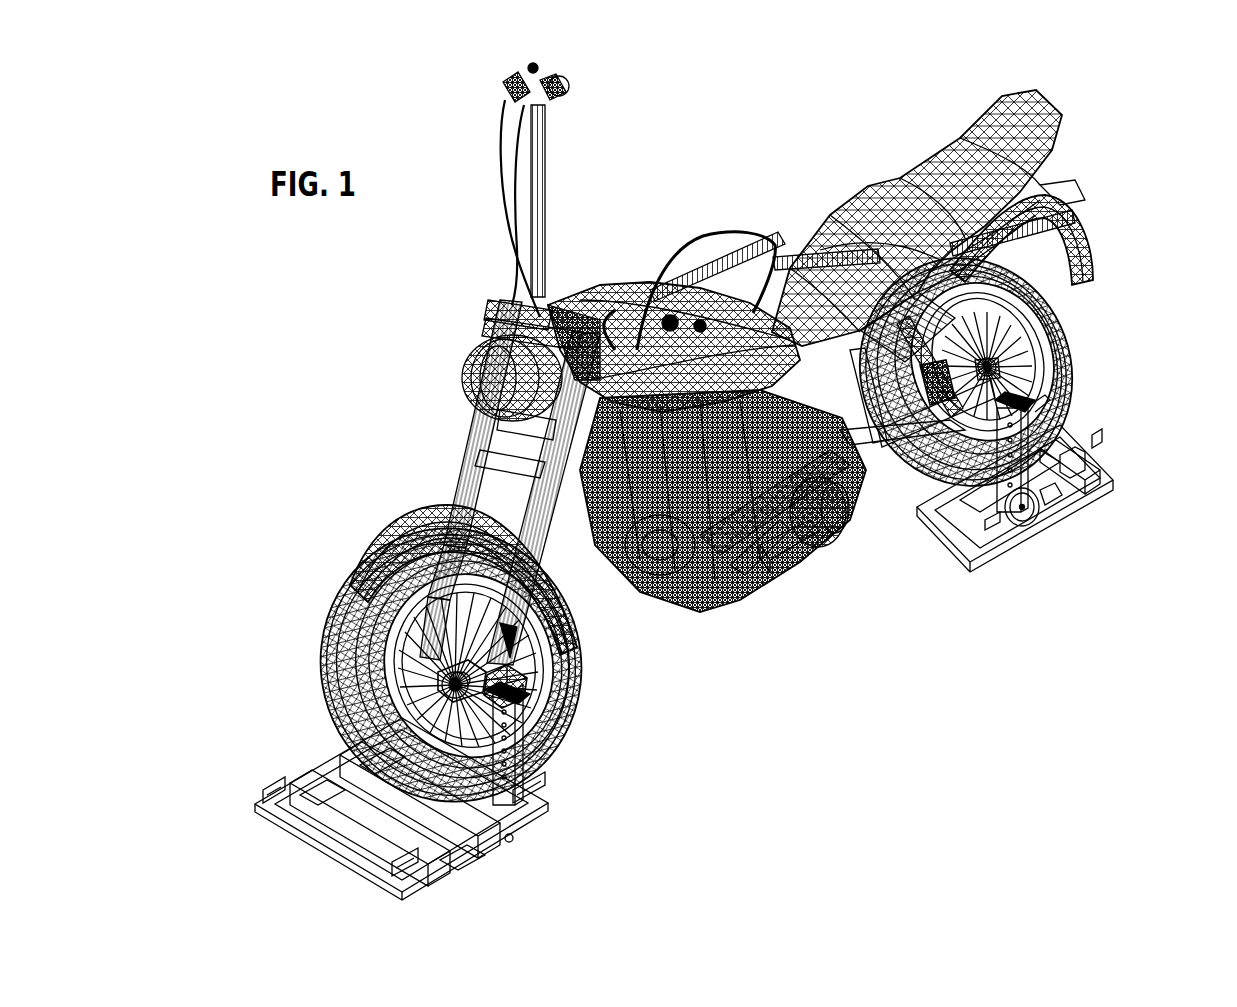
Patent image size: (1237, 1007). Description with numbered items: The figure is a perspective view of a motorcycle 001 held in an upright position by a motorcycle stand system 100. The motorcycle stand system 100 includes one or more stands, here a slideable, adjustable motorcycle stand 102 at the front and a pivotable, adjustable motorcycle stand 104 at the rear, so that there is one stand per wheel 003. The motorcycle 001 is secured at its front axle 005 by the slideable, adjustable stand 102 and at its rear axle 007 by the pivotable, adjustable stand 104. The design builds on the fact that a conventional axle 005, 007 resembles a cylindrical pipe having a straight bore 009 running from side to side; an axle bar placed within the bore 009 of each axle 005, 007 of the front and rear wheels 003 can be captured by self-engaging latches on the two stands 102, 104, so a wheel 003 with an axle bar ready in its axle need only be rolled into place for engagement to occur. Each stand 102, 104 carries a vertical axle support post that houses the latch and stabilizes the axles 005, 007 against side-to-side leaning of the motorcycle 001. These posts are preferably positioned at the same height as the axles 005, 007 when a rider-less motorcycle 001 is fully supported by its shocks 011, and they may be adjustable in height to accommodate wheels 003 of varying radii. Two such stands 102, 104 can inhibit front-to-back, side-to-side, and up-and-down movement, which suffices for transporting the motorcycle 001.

The motorcycle 001 is at (745, 163).
The wheel 003 is at (360, 598).
The front axle 005 is at (500, 680).
The rear axle 007 is at (995, 372).
The bore 009 is at (470, 686).
The shocks 011 is at (520, 602).
The motorcycle stand system 100 is at (1035, 780).
The slideable, adjustable motorcycle stand 102 is at (512, 833).
The pivotable, adjustable motorcycle stand 104 is at (1000, 530).